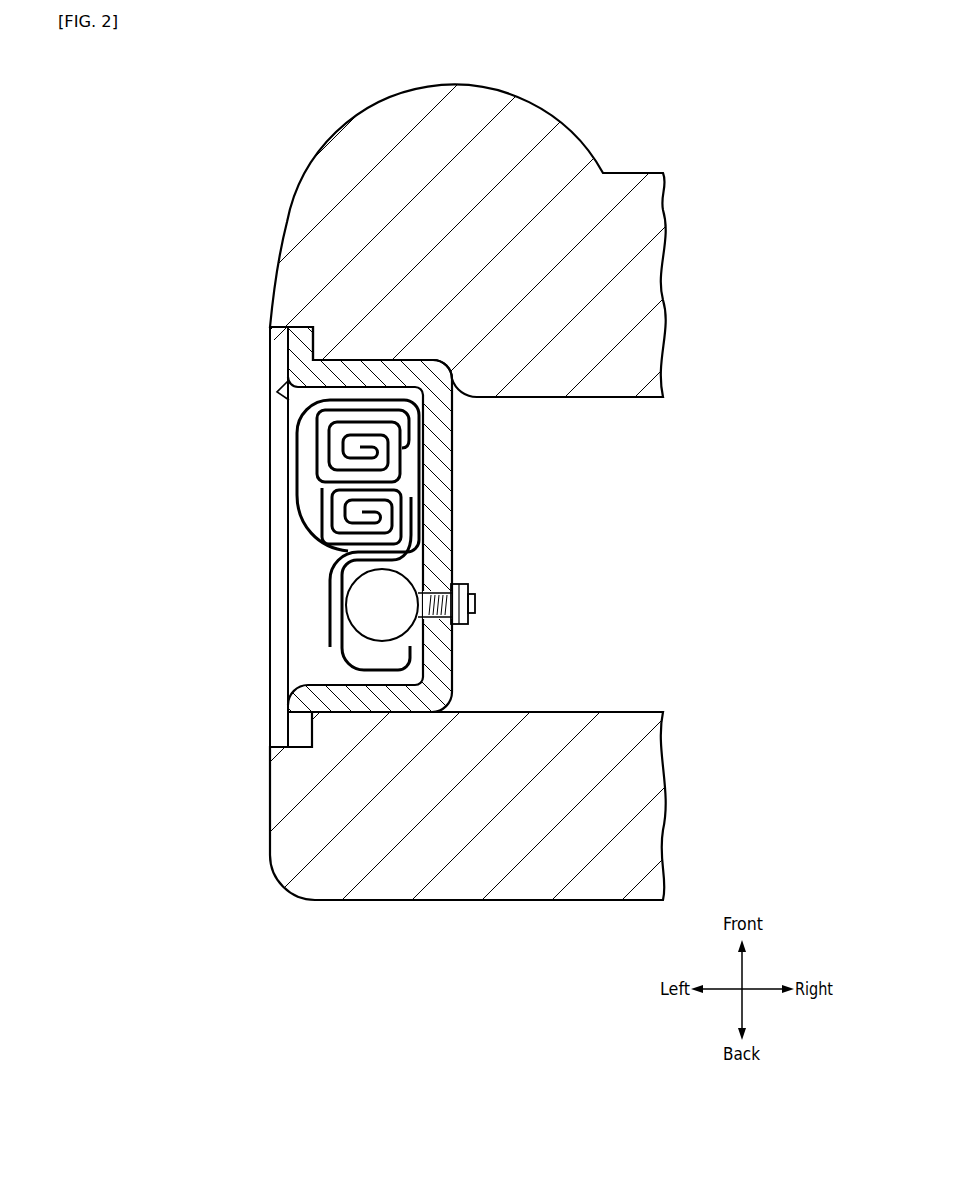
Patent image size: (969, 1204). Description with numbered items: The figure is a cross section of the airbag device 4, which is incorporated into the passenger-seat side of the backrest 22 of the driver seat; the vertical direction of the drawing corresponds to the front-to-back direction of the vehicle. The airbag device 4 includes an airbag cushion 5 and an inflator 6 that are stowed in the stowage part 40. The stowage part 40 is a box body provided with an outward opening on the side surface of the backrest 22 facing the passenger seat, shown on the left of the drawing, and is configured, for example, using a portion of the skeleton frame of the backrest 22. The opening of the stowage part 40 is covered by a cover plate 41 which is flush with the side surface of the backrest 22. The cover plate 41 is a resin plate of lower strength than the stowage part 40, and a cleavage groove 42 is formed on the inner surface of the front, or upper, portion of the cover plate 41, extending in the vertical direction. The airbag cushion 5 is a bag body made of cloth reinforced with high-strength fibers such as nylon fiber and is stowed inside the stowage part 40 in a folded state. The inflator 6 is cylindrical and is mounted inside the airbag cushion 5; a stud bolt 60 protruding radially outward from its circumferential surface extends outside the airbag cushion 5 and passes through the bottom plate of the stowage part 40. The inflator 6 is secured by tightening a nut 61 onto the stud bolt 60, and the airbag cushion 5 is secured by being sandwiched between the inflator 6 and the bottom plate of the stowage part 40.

The backrest 22 is at (315, 143).
The airbag device 4 is at (420, 533).
The stowage part 40 is at (450, 481).
The cover plate 41 is at (272, 513).
The cleavage groove 42 is at (272, 400).
The airbag cushion 5 is at (303, 599).
The inflator 6 is at (408, 574).
The stud bolt 60 is at (475, 602).
The nut 61 is at (460, 626).